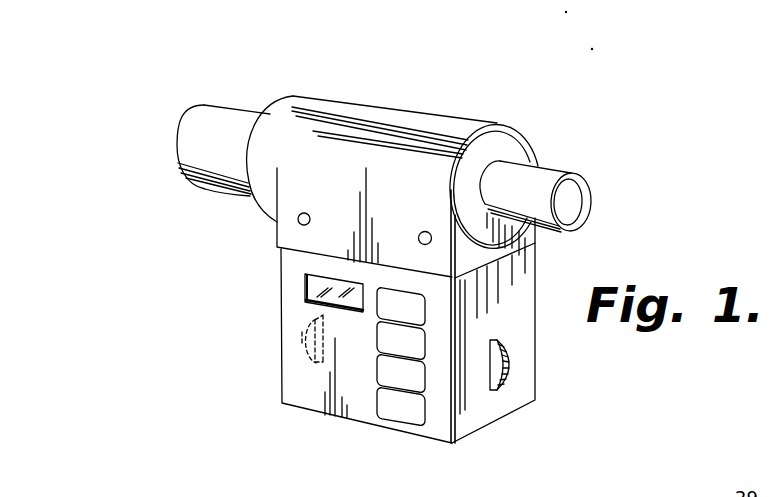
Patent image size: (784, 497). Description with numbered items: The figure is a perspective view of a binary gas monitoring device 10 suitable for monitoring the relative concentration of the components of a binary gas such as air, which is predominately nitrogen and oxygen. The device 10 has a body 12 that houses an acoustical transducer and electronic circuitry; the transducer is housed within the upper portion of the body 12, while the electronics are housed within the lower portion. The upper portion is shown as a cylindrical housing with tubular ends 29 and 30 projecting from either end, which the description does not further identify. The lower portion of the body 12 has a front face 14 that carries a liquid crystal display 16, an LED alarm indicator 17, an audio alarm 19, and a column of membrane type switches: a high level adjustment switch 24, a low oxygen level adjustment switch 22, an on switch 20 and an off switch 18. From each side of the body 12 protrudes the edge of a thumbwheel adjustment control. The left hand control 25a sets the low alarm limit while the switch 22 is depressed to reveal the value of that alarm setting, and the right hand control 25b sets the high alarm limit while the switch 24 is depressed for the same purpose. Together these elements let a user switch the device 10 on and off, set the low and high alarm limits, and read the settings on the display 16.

The gas monitoring device 10 is at (598, 133).
The body 12 is at (529, 262).
The front face 14 is at (306, 401).
The liquid crystal display 16 is at (307, 288).
The LED alarm indicator 17 is at (298, 221).
The off switch 18 is at (396, 410).
The audio alarm 19 is at (426, 231).
The on switch 20 is at (382, 370).
The low oxygen level adjustment switch 22 is at (379, 340).
The high level adjustment switch 24 is at (378, 316).
The left hand thumbwheel adjustment control 25a is at (302, 338).
The right hand thumbwheel adjustment control 25b is at (509, 365).
The inlet tube 29 is at (232, 112).
The outlet tube 30 is at (542, 181).